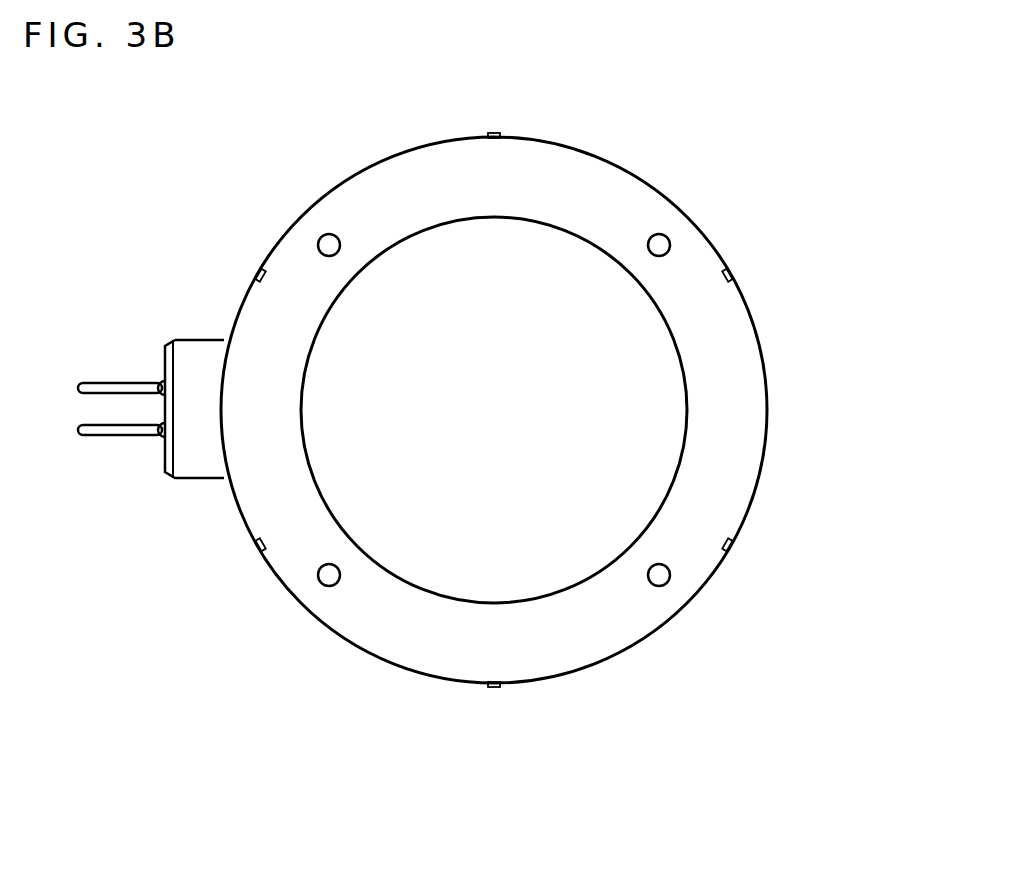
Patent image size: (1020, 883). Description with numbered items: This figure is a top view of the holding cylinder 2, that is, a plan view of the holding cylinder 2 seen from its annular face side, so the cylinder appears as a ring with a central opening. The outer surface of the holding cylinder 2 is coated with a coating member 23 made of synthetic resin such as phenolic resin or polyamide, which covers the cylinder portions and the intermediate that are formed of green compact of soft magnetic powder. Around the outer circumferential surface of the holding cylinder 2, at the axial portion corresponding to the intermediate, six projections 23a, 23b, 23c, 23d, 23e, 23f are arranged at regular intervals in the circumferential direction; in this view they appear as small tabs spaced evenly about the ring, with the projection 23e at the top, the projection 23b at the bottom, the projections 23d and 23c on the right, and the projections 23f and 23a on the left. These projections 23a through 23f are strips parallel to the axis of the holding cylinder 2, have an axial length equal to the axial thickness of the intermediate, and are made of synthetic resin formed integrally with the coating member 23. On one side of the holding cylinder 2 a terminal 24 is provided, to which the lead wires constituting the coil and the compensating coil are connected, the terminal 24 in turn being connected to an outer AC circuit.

The holding cylinder 2 is at (253, 175).
The coating member 23 is at (762, 397).
The projection 23a is at (250, 550).
The projection 23b is at (494, 688).
The projection 23c is at (738, 549).
The projection 23d is at (738, 272).
The projection 23e is at (494, 133).
The projection 23f is at (250, 270).
The terminal 24 is at (130, 437).